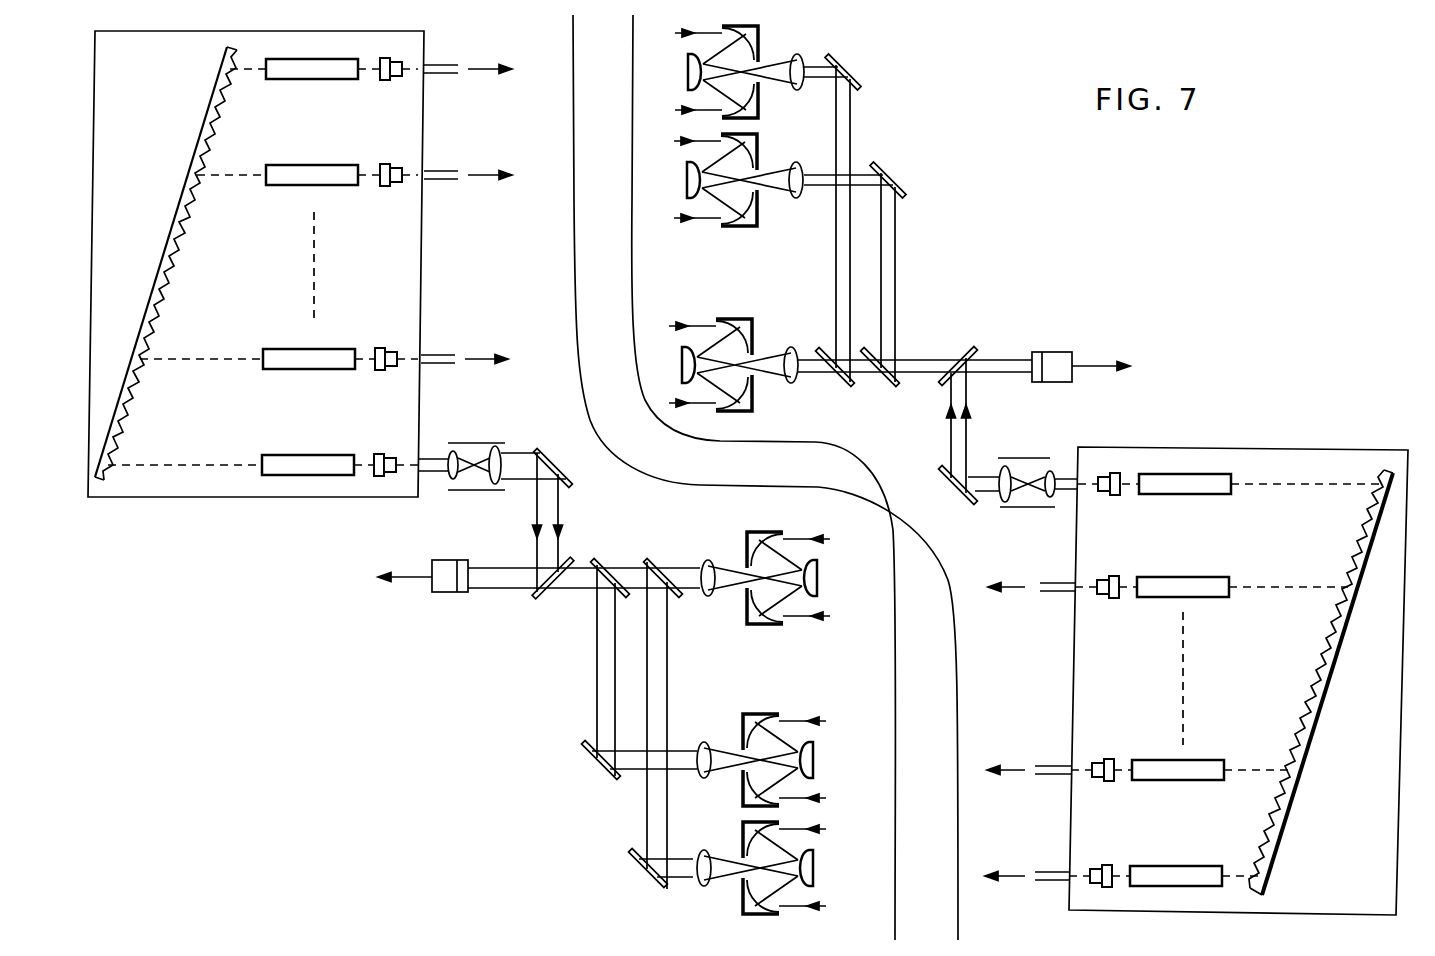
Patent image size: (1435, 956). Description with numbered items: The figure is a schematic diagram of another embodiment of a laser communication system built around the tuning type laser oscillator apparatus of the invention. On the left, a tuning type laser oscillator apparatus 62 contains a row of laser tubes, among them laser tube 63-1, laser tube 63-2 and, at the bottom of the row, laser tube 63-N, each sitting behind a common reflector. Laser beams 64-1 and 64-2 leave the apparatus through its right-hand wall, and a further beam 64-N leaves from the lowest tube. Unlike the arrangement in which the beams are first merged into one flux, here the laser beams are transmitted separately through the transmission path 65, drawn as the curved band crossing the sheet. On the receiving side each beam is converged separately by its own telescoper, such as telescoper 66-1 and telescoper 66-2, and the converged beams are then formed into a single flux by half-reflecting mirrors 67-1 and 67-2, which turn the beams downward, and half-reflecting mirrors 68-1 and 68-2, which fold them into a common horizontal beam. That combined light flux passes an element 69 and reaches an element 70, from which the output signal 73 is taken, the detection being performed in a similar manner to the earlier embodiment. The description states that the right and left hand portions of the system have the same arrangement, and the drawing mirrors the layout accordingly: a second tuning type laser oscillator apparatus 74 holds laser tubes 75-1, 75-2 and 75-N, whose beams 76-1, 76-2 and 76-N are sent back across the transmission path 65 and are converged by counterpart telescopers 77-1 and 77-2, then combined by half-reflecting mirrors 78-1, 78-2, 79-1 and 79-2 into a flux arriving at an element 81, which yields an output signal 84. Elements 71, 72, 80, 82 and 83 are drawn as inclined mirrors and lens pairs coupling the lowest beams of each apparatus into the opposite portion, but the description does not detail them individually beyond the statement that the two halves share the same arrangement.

The tuning type laser oscillator apparatus 62 is at (291, 499).
The laser tube 63-1 is at (346, 80).
The laser tube 63-2 is at (347, 165).
The laser 63-N is at (333, 455).
The laser beam 64-1 is at (445, 75).
The laser beam 64-2 is at (452, 171).
The output beam 64-N is at (432, 456).
The transmission path 65 is at (575, 272).
The telescoper 66-1 is at (765, 50).
The telescoper 66-2 is at (760, 210).
The half-reflecting mirror 67-1 is at (862, 74).
The half-reflecting mirror 67-2 is at (894, 173).
The half-reflecting mirror 68-1 is at (843, 385).
The half-reflecting mirror 68-2 is at (890, 387).
The beam splitter 69 is at (977, 350).
The detector 70 is at (1065, 352).
The mirror 71 is at (953, 500).
The lens assembly 72 is at (1033, 457).
The output signal 73 is at (1100, 366).
The second laser housing 74 is at (1228, 447).
The laser 75-N is at (1208, 497).
The laser 75-2 is at (1208, 780).
The laser 75-1 is at (1192, 843).
The output beam 76-N is at (1066, 493).
The output beam 76-2 is at (1055, 766).
The output beam 76-1 is at (1052, 870).
The detector unit 77-2 is at (795, 695).
The detector unit 77-1 is at (742, 888).
The beam splitter 78-1 is at (640, 868).
The beam splitter 78-2 is at (592, 768).
The beam splitter 79-1 is at (652, 567).
The beam splitter 79-2 is at (611, 555).
The beam splitter 80 is at (540, 597).
The detector 81 is at (447, 593).
The lens assembly 82 is at (452, 492).
The mirror 83 is at (557, 447).
The output signal 84 is at (412, 580).